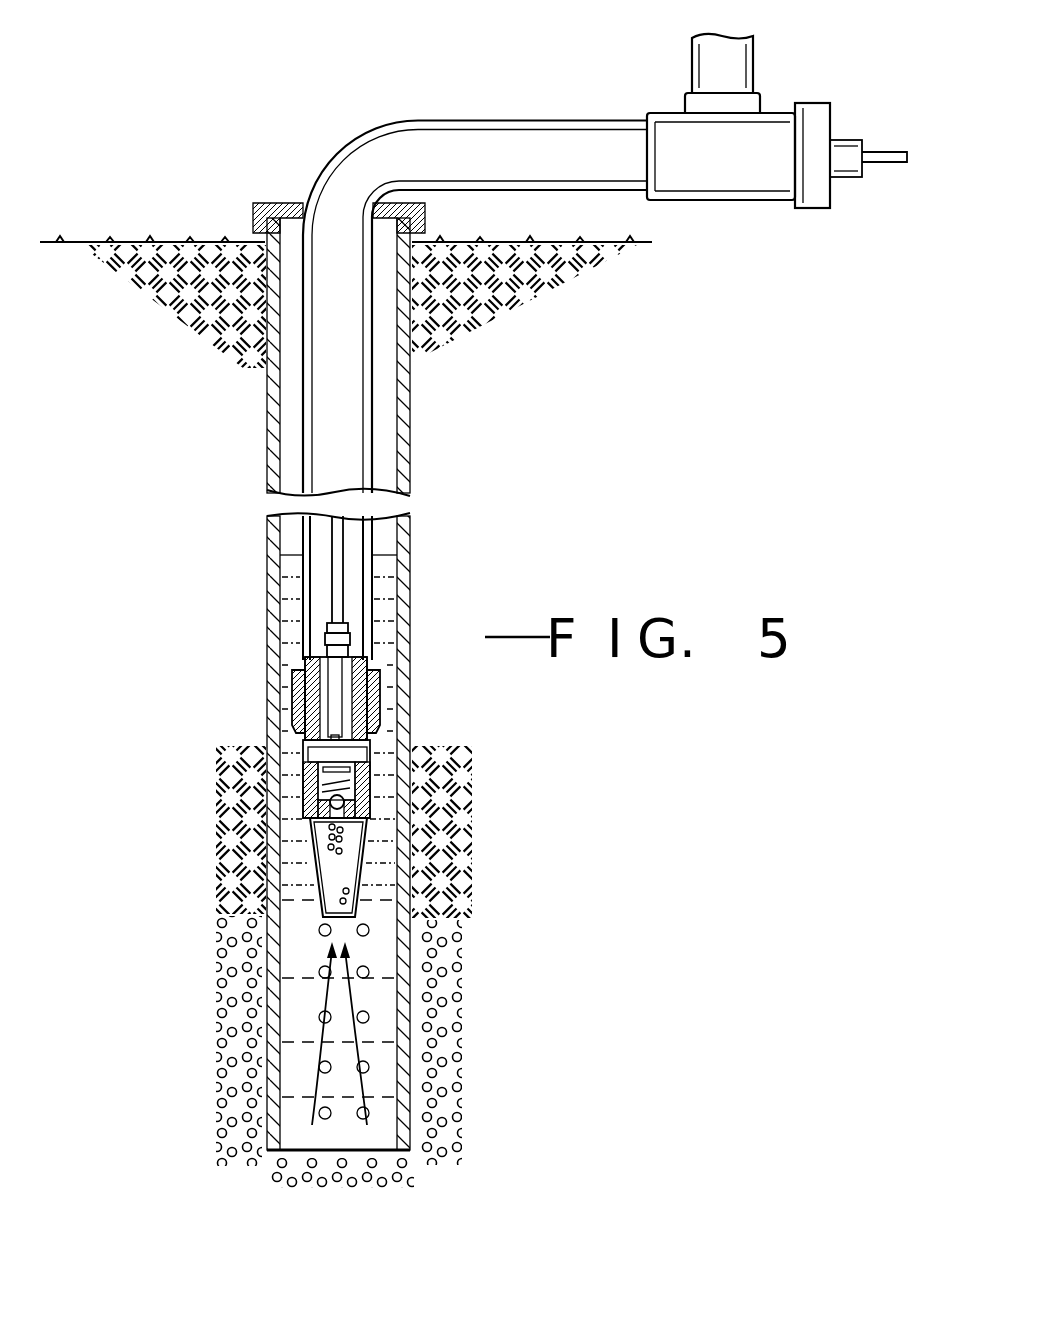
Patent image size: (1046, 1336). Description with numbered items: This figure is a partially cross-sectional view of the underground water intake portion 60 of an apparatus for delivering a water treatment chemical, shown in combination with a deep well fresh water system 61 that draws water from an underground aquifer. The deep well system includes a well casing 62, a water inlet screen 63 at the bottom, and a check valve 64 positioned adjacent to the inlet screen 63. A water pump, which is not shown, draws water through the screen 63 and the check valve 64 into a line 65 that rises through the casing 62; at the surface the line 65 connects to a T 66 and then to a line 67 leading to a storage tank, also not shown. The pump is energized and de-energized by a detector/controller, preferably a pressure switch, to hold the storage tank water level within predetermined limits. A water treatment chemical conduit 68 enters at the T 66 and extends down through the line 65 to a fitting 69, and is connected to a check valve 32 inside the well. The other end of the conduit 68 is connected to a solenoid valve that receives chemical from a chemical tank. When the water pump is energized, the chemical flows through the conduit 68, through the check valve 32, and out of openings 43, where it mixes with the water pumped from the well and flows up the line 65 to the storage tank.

The intake portion 60 is at (192, 812).
The deep well fresh water system 61 is at (440, 918).
The well casing 62 is at (410, 590).
The water inlet screen 63 is at (365, 873).
The check valve 64 is at (367, 782).
The line 65 is at (377, 539).
The T 66 is at (715, 200).
The line 67 is at (755, 65).
The water treatment chemical conduit 68 is at (883, 163).
The fitting 69 is at (350, 640).
The check valve 32 is at (385, 700).
The openings 43 is at (305, 690).